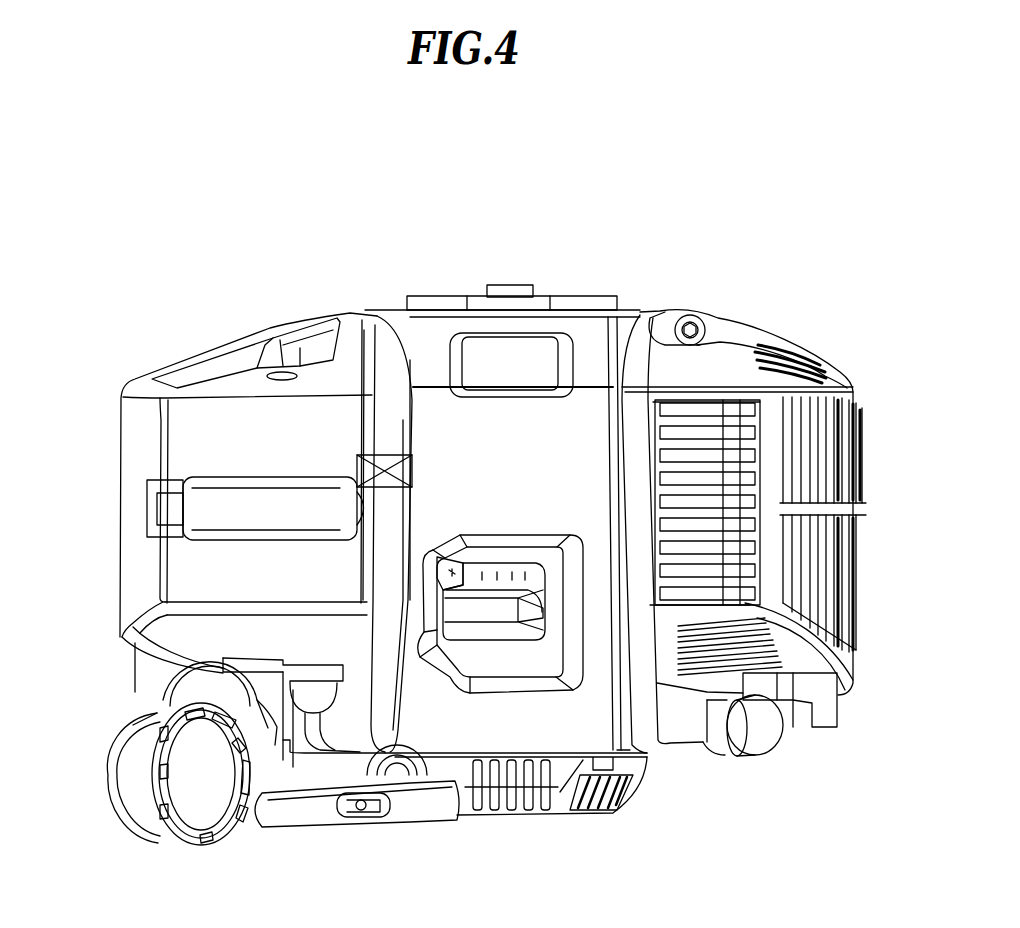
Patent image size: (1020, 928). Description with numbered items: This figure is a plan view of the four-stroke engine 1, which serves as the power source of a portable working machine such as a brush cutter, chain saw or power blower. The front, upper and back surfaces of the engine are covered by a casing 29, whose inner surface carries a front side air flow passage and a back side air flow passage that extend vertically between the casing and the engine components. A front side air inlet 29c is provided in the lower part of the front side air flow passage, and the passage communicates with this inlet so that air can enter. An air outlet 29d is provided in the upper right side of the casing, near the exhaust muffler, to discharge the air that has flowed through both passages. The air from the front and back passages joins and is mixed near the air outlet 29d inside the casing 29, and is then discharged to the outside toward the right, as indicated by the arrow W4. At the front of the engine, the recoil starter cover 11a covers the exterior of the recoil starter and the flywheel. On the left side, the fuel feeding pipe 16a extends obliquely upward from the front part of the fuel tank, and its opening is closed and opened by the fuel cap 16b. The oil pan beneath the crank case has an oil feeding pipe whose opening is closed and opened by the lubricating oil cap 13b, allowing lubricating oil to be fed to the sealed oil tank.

The four-stroke engine 1 is at (493, 550).
The casing 29 is at (398, 335).
The air outlet 29d is at (701, 432).
The front side air inlet 29c is at (547, 800).
The fuel feeding pipe 16a is at (205, 692).
The fuel cap 16b is at (137, 805).
The recoil starter cover 11a is at (460, 817).
The lubricating oil cap 13b is at (773, 738).
The arrow indicating air discharge direction W4 is at (927, 450).